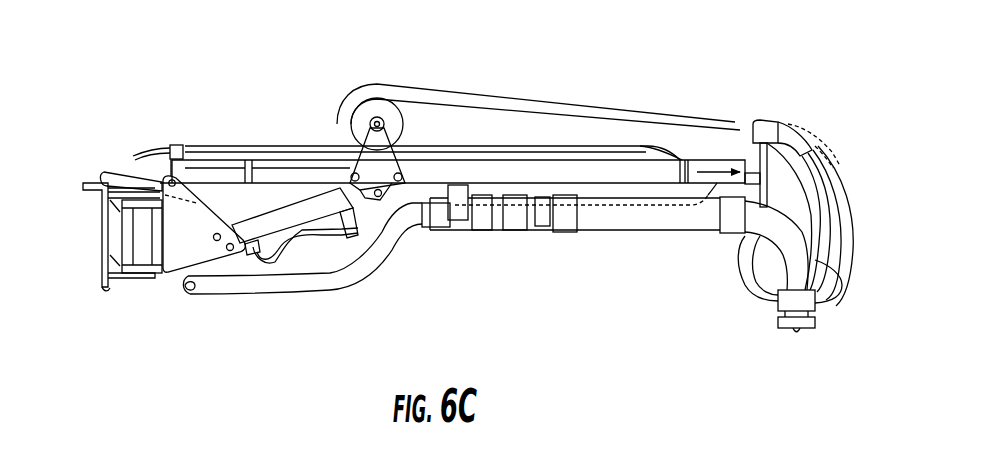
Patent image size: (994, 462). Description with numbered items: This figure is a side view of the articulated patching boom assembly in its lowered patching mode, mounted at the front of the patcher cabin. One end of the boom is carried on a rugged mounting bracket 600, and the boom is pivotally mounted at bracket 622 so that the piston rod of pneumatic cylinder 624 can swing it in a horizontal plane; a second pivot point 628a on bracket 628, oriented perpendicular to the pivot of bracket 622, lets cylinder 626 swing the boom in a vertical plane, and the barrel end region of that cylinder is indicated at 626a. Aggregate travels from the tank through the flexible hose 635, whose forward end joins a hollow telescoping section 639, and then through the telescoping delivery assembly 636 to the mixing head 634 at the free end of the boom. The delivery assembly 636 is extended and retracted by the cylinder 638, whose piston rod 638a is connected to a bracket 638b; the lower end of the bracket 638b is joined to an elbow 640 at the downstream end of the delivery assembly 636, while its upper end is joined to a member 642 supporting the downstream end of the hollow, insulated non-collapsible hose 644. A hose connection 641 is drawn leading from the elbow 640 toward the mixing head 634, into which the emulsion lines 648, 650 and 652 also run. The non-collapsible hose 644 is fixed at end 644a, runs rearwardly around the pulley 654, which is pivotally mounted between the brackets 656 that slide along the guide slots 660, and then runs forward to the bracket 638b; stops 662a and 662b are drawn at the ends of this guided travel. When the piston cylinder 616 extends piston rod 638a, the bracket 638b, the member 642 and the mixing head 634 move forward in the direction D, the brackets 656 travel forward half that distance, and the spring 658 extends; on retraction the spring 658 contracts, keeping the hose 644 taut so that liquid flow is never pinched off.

The mounting bracket 600 is at (108, 290).
The piston cylinder 616 is at (710, 157).
The pivot bracket 622 is at (145, 290).
The pneumatic cylinder 624 is at (115, 174).
The cylinder 626 is at (272, 228).
The barrel linkage 626a is at (357, 200).
The bracket 628 is at (173, 267).
The pivot point 628a is at (166, 179).
The mixing head 634 is at (778, 304).
The flexible hose 635 is at (357, 297).
The telescoping delivery assembly 636 is at (595, 240).
The cylinder 638 is at (688, 195).
The piston rod 638a is at (755, 168).
The bracket 638b is at (767, 143).
The telescoping section 639 is at (498, 228).
The elbow 640 is at (770, 222).
The hose 641 is at (720, 237).
The member 642 is at (800, 123).
The non-collapsible hose 644 is at (412, 84).
The fixed end of non-collapsible hose 644a is at (657, 158).
The emulsion line 648 is at (838, 207).
The emulsion line 650 is at (843, 285).
The emulsion line 652 is at (757, 290).
The pulley 654 is at (360, 98).
The brackets 656 is at (395, 150).
The spring 658 is at (238, 144).
The guide slots 660 is at (305, 162).
The stop 662a is at (205, 203).
The stop 662b is at (665, 195).
The direction arrow D is at (720, 216).